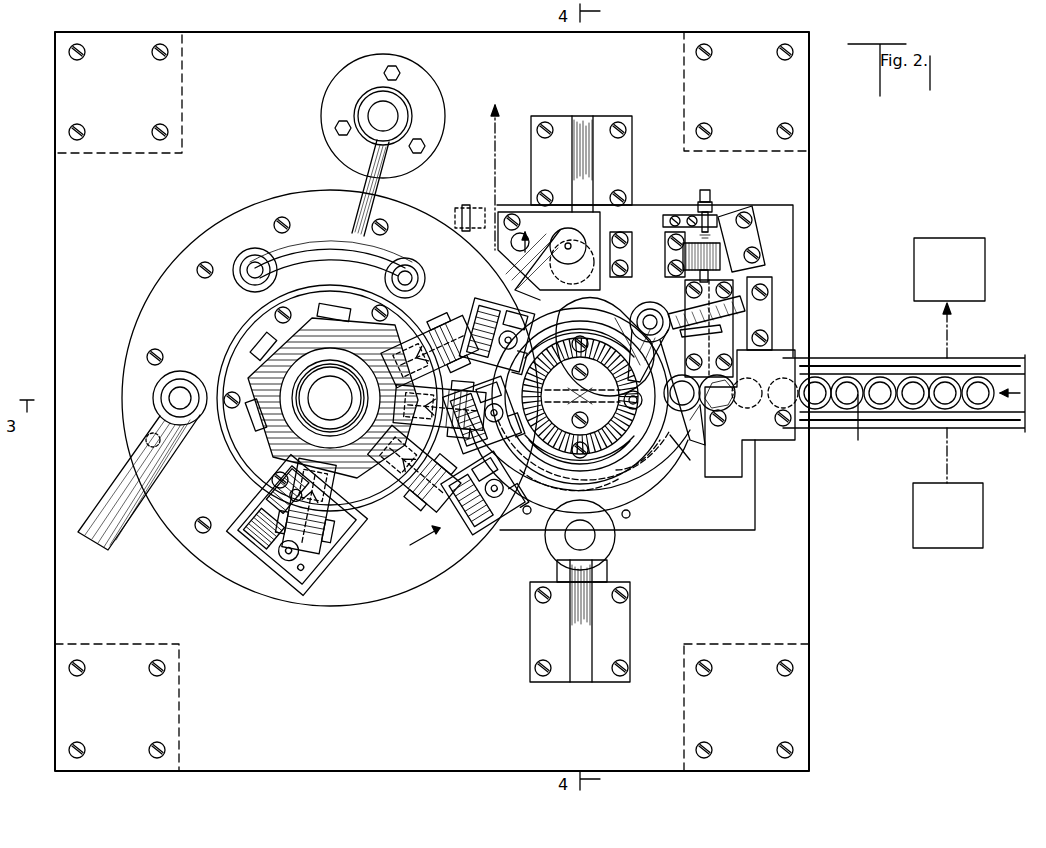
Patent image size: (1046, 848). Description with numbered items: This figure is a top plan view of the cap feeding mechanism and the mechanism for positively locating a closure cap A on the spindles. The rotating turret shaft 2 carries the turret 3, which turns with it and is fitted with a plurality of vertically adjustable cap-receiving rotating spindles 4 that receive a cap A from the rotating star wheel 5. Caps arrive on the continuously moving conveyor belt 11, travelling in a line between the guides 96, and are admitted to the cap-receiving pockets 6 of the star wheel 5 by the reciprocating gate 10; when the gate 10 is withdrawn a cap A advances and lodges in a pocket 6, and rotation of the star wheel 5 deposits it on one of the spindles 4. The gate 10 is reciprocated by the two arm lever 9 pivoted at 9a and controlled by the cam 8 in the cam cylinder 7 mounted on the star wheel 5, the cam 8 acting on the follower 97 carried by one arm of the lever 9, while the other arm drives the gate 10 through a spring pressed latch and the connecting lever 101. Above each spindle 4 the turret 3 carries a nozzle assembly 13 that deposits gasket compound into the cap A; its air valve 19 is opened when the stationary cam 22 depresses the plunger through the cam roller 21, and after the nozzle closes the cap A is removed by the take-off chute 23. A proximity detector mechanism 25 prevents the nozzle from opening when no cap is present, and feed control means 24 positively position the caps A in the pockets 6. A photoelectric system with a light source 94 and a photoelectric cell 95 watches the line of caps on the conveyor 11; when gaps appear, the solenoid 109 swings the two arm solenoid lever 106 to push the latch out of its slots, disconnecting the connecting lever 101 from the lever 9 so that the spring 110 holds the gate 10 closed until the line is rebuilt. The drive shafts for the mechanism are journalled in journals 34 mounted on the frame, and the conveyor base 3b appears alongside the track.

The rotating turret shaft 2 is at (300, 390).
The turret 3 is at (347, 598).
The conveyor base 3b is at (866, 417).
The cap-receiving rotating spindles 4 is at (240, 262).
The rotating star wheel 5 is at (656, 462).
The cap-receiving pockets 6 is at (568, 484).
The cam cylinder 7 is at (662, 442).
The cam 8 is at (605, 332).
The two arm lever 9 is at (620, 395).
The pivot 9a is at (652, 310).
The reciprocating gate 10 is at (728, 405).
The conveyor belt 11 is at (848, 364).
The nozzle assembly 13 is at (258, 570).
The air valve 19 is at (452, 402).
The cam roller 21 is at (462, 352).
The stationary cam 22 is at (318, 242).
The take-off chute 23 is at (114, 538).
The feed control means 24 is at (778, 265).
The proximity detector mechanism 25 is at (552, 240).
The journals 34 is at (614, 546).
The light source 94 is at (983, 503).
The photoelectric cell 95 is at (985, 268).
The guides 96 is at (1000, 372).
The follower 97 is at (622, 407).
The connecting lever 101 is at (706, 324).
The two arm solenoid lever 106 is at (690, 281).
The solenoid 109 is at (683, 257).
The spring 110 is at (708, 222).
The cap A is at (692, 420).